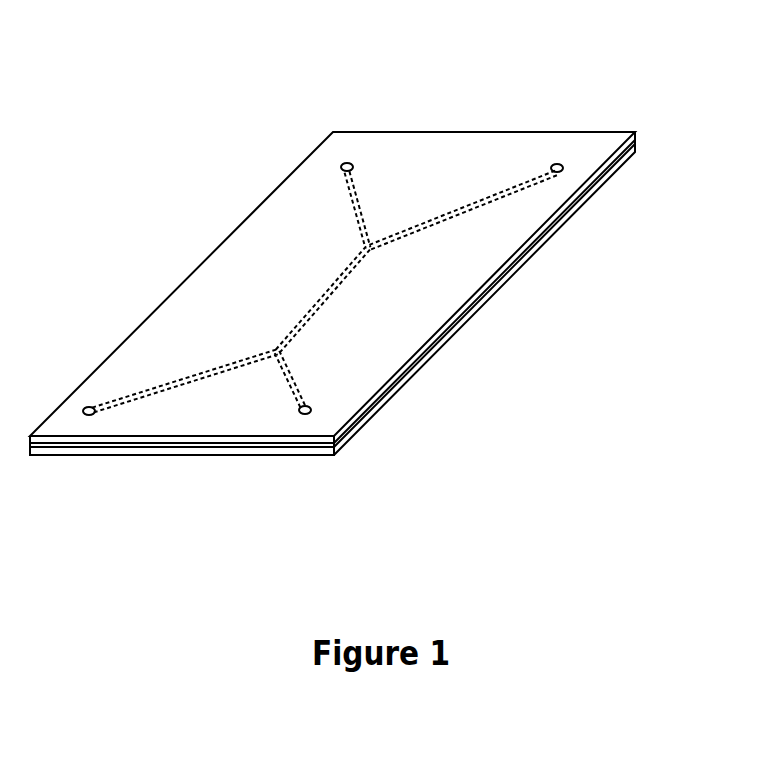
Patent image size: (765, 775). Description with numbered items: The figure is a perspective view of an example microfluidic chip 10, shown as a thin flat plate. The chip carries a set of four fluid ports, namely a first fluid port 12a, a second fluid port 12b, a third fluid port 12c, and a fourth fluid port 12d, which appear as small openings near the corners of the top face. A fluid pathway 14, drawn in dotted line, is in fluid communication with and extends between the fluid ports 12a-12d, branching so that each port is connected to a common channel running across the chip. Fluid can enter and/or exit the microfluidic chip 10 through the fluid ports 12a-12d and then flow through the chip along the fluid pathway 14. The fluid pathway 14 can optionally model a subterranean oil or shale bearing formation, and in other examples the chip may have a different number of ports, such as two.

The microfluidic chip 10 is at (116, 138).
The first fluid port 12a is at (350, 163).
The second fluid port 12b is at (556, 164).
The third fluid port 12c is at (85, 417).
The fourth fluid port 12d is at (302, 416).
The fluid pathway 14 is at (317, 303).